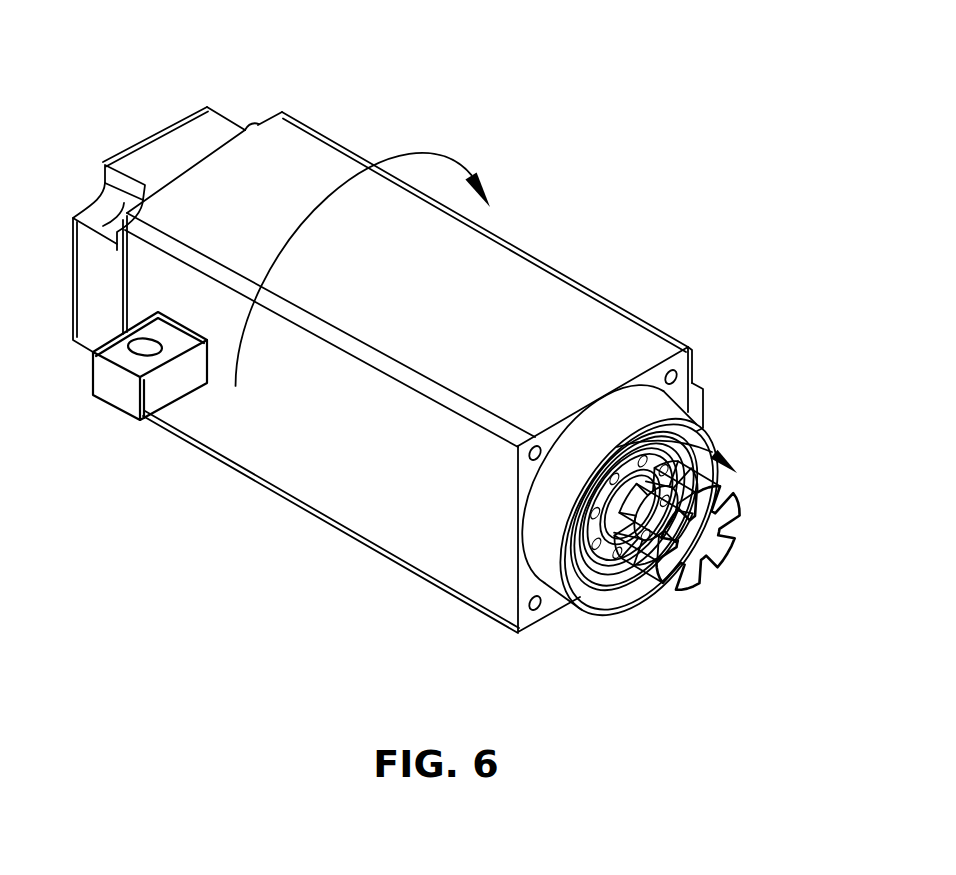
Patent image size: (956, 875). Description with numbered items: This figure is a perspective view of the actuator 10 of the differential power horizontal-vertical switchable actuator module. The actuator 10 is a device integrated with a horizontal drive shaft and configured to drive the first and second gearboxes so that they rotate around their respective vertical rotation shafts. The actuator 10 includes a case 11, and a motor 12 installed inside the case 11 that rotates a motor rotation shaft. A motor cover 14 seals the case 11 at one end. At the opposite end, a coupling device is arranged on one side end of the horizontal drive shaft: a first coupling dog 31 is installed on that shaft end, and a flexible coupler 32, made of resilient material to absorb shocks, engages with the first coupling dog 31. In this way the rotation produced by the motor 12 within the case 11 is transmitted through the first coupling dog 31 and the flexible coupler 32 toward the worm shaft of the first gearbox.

The actuator 10 is at (650, 68).
The case 11 is at (512, 273).
The motor 12 is at (305, 438).
The motor cover 14 is at (167, 150).
The first coupling dog 31 is at (633, 547).
The flexible coupler 32 is at (707, 550).